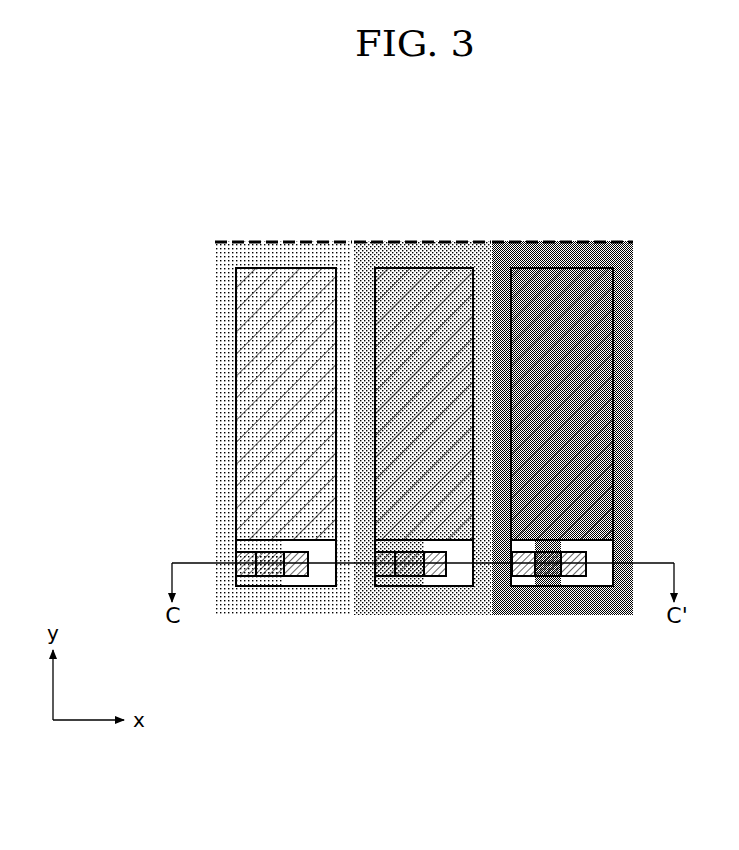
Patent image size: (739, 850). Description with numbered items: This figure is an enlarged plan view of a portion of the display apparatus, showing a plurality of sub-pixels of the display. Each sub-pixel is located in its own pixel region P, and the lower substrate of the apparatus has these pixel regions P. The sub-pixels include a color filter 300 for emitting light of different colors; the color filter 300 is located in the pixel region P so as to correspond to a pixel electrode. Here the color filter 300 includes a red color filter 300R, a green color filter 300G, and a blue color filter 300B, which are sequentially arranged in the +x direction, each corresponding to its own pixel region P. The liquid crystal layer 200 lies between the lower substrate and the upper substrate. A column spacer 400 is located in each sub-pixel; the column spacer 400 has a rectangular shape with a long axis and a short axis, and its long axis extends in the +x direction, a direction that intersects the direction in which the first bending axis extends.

The liquid crystal layer 200 is at (276, 266).
The column spacer 400 is at (262, 570).
The color filter 300 is at (424, 500).
The red color filter 300R is at (317, 596).
The green color filter 300G is at (456, 598).
The blue color filter 300B is at (562, 477).
The pixel region P is at (424, 440).